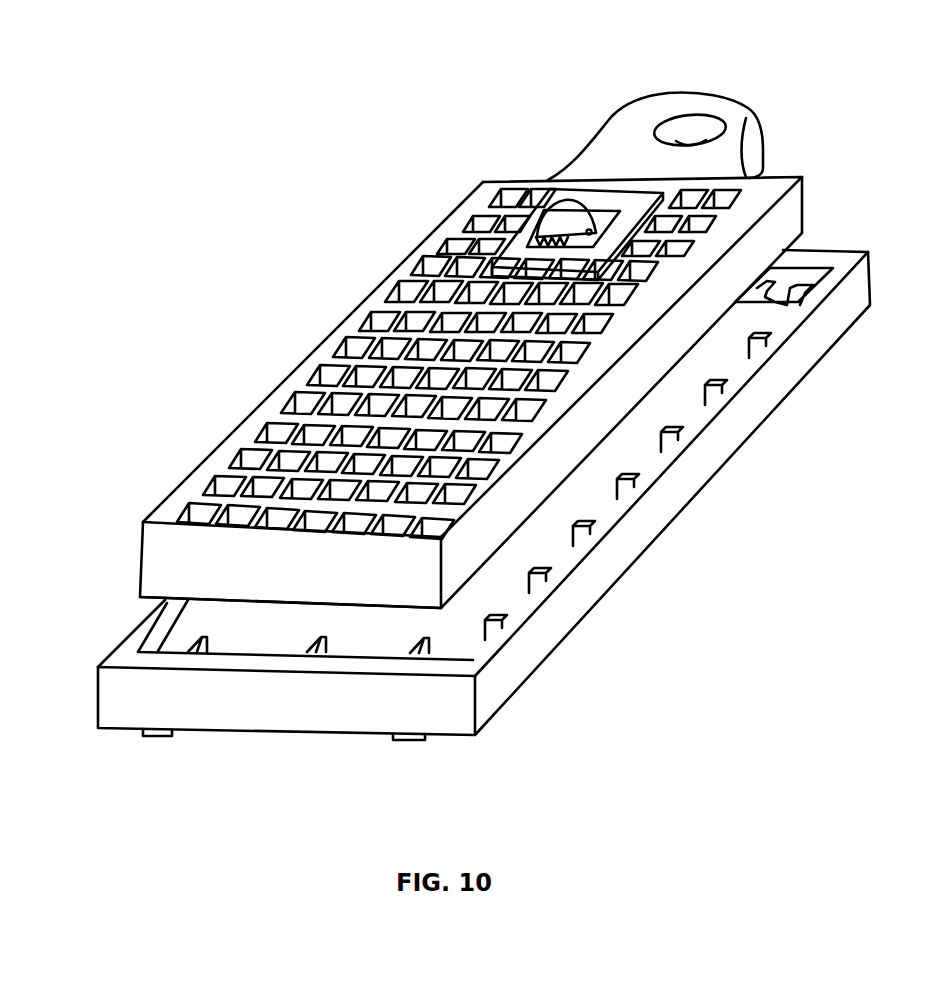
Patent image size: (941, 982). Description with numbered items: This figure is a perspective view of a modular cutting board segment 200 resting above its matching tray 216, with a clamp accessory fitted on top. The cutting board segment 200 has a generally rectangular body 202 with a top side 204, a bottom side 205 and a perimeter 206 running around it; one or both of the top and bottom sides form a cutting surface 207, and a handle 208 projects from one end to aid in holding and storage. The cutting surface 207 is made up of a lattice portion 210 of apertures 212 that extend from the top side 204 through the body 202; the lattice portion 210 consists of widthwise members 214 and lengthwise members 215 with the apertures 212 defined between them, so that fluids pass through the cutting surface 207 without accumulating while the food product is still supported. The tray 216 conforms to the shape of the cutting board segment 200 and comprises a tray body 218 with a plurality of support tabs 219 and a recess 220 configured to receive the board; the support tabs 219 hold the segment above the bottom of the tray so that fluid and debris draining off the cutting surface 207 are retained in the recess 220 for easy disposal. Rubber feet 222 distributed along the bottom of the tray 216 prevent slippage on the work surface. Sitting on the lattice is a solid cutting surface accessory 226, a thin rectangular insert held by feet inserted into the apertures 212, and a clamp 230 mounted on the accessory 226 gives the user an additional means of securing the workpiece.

The cutting board segment 200 is at (287, 343).
The body 202 is at (797, 195).
The top side 204 is at (237, 447).
The bottom side 205 is at (252, 612).
The perimeter 206 is at (433, 238).
The cutting surface 207 is at (620, 362).
The handle 208 is at (743, 120).
The lattice portion 210 is at (277, 403).
The apertures 212 is at (485, 197).
The widthwise members 214 is at (612, 318).
The lengthwise members 215 is at (403, 285).
The tray 216 is at (657, 493).
The tray body 218 is at (523, 607).
The support tabs 219 is at (700, 410).
The recess 220 is at (447, 635).
The rubber feet 222 is at (162, 735).
The solid cutting surface accessory 226 is at (553, 213).
The clamp 230 is at (555, 222).